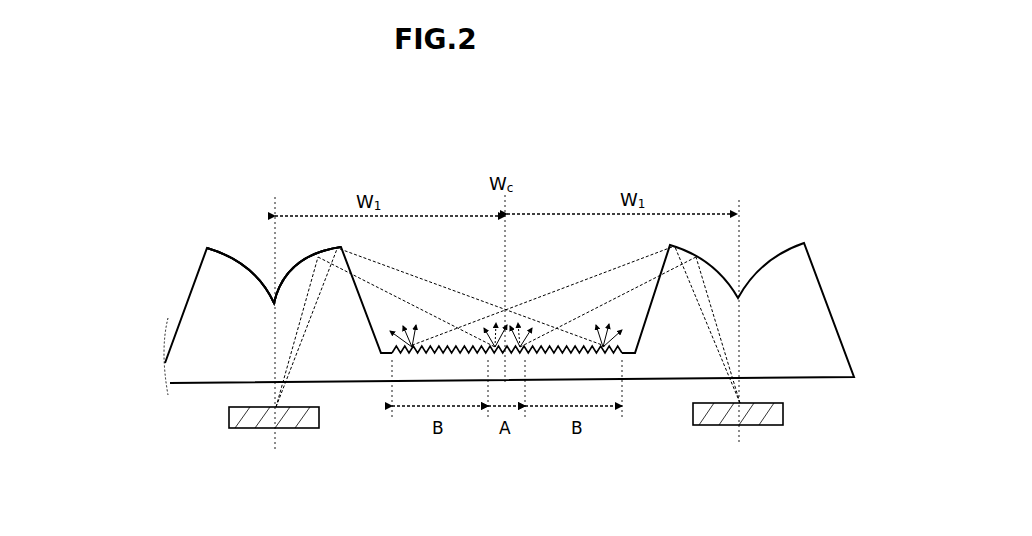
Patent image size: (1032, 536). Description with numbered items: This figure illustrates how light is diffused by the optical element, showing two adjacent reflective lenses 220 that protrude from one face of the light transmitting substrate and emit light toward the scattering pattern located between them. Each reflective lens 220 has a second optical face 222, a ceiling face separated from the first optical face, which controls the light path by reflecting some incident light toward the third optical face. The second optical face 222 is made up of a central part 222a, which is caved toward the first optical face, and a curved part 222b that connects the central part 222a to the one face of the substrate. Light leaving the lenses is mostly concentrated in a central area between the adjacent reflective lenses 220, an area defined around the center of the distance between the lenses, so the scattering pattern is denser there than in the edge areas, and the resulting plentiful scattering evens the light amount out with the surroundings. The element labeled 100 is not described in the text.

The light source 100 is at (277, 429).
The reflective lens 220 is at (172, 274).
The second optical face 222 is at (180, 160).
The central part 222a is at (274, 260).
The curved part 222b is at (225, 250).